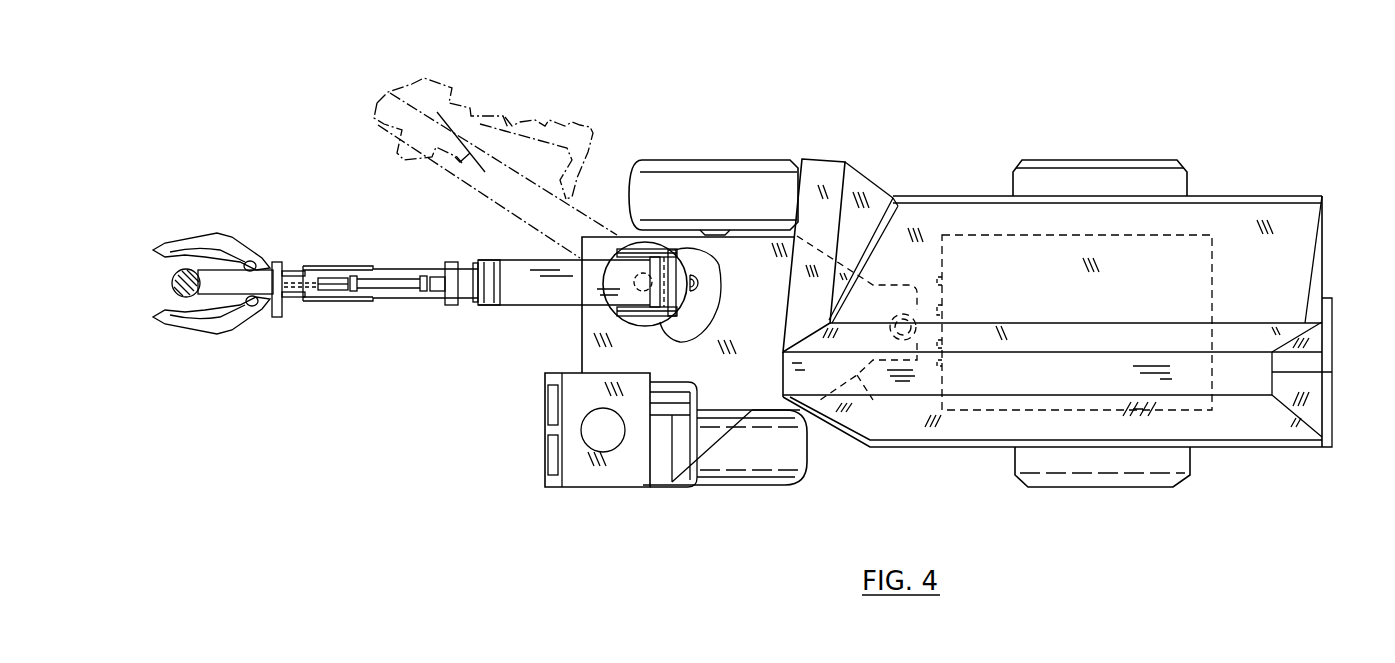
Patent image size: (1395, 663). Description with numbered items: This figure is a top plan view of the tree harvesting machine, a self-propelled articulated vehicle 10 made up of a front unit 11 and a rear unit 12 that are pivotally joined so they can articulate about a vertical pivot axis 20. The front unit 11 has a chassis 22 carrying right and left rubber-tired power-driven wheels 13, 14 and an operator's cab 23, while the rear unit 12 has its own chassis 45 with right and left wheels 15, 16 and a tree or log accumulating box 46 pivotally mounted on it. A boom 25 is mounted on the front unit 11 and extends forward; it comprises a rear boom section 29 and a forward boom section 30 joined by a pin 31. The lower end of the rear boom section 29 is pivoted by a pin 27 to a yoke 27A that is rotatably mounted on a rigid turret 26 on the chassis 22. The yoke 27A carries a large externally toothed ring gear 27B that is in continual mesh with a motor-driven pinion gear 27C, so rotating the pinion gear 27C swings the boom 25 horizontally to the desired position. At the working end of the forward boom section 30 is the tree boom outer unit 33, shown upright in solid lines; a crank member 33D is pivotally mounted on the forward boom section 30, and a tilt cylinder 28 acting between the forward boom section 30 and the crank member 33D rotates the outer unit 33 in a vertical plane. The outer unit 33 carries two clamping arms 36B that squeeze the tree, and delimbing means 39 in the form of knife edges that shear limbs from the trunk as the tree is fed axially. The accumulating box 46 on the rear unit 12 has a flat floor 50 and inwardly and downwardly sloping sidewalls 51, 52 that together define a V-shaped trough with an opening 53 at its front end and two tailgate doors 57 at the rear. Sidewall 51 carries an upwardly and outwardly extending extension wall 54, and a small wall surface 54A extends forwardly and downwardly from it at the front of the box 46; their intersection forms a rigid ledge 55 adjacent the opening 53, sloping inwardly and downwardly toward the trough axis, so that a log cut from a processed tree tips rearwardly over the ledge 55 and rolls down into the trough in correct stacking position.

The self-propelled articulated vehicle 10 is at (850, 110).
The front unit 11 is at (557, 361).
The rear unit 12 is at (970, 183).
The right wheel 13 is at (782, 473).
The left wheel 14 is at (745, 172).
The right wheel 15 is at (1068, 470).
The left wheel 16 is at (1100, 175).
The vertical pivot axis 20 is at (892, 312).
The chassis 22 is at (860, 380).
The operator's cab 23 is at (602, 485).
The boom 25 is at (412, 263).
The turret 26 is at (635, 280).
The pin 27 is at (690, 263).
The yoke 27A is at (640, 313).
The ring gear 27B is at (685, 300).
The pinion gear 27C is at (703, 280).
The tilt cylinder 28 is at (375, 280).
The rear boom section 29 is at (560, 305).
The forward boom section 30 is at (401, 300).
The pin 31 is at (480, 298).
The tree boom outer unit 33 is at (166, 282).
The crank member 33D is at (300, 270).
The clamping arms 36B is at (153, 250).
The delimbing means 39 is at (198, 257).
The chassis 45 is at (1212, 232).
The accumulating box 46 is at (1305, 218).
The floor 50 is at (1230, 388).
The sidewall 51 is at (1228, 348).
The sidewall 52 is at (1233, 428).
The opening 53 is at (782, 373).
The extension wall 54 is at (1267, 298).
The wall surface 54A is at (872, 198).
The ledge 55 is at (902, 205).
The tailgate doors 57 is at (1332, 383).